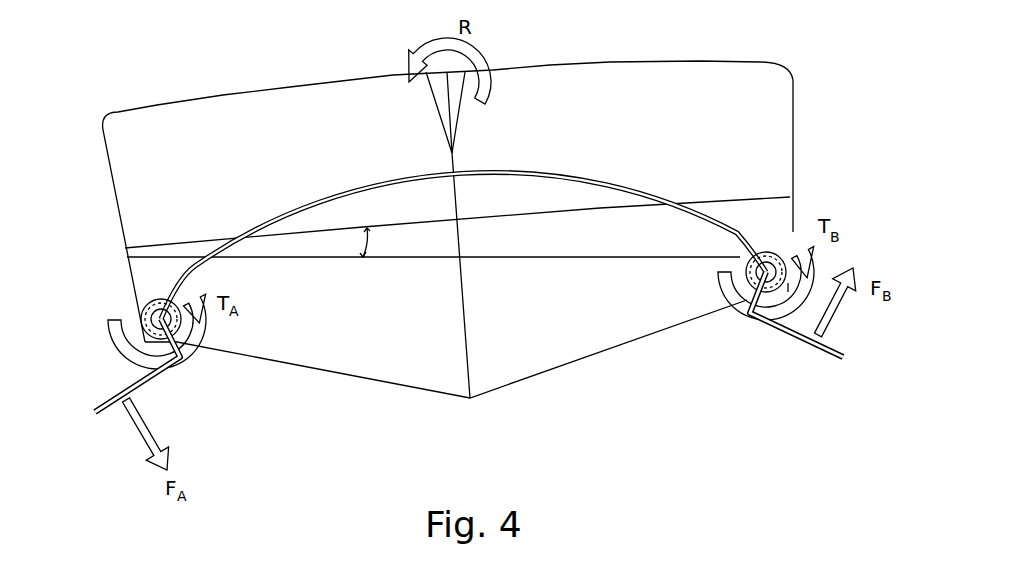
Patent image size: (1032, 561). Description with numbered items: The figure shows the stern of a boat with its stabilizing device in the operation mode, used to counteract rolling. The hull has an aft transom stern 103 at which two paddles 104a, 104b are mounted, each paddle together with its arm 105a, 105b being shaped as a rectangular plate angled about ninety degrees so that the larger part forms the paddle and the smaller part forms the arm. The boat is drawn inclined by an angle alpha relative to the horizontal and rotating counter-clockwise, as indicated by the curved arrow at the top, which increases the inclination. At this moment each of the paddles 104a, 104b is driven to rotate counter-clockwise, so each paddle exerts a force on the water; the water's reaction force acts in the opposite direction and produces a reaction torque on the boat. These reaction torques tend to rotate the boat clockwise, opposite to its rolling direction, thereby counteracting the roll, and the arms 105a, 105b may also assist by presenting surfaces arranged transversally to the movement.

The aft transom stern 103 is at (348, 364).
The paddle 104a is at (148, 392).
The paddle 104b is at (783, 340).
The arm 105a is at (178, 340).
The arm 105b is at (747, 297).